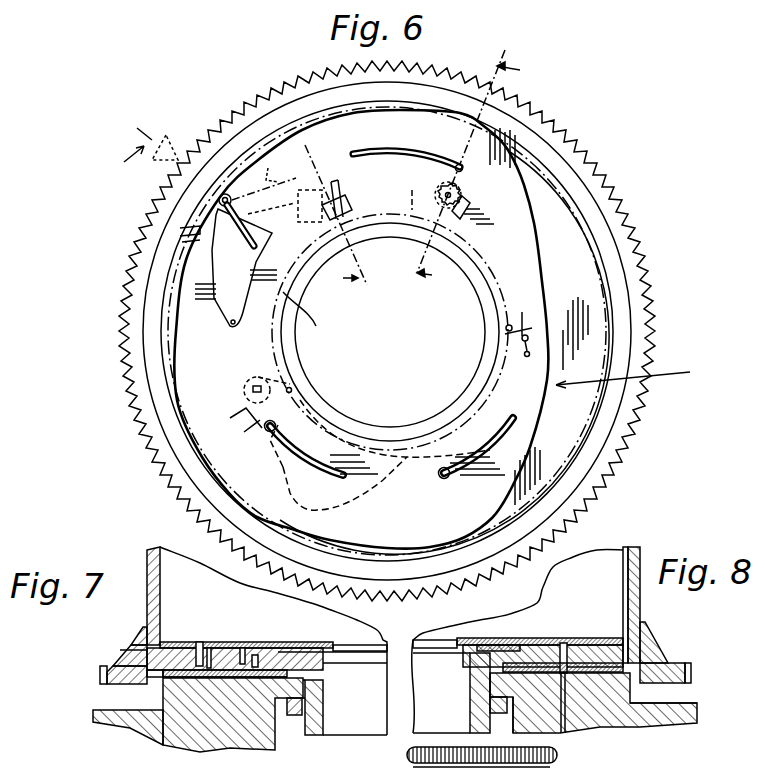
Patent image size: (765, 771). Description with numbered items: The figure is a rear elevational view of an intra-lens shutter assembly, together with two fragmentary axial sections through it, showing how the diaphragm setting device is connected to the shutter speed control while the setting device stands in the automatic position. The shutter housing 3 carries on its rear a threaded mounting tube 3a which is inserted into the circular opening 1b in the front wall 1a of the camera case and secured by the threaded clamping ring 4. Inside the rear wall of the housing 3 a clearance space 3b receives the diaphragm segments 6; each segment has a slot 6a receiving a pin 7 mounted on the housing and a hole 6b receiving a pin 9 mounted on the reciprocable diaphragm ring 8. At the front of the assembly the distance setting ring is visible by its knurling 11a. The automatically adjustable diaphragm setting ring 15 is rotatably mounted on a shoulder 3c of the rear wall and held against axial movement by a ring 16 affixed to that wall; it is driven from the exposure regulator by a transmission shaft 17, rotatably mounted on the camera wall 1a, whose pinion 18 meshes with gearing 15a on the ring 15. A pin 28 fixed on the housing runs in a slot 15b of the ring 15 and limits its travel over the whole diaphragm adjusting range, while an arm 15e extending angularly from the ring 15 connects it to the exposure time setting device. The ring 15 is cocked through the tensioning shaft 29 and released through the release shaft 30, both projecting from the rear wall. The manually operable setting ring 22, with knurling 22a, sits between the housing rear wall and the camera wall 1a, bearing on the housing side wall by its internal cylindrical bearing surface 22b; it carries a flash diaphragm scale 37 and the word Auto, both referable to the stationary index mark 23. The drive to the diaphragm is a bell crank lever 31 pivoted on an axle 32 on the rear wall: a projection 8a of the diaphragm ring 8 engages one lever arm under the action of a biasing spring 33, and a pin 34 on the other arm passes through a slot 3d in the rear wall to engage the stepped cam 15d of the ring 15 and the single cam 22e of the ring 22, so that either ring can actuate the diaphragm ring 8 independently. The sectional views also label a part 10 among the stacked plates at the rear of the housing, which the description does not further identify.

In FIG. 7, the front wall 1a is at (158, 722).
In FIG. 8, the front wall 1a is at (643, 712).
In FIG. 7, the circular opening 1b is at (323, 693).
In FIG. 8, the circular opening 1b is at (478, 693).
In FIG. 7, the shutter housing 3 is at (150, 552).
In FIG. 8, the shutter housing 3 is at (642, 603).
In FIG. 6, the mounting tube 3a is at (478, 373).
In FIG. 7, the mounting tube 3a is at (323, 712).
In FIG. 8, the mounting tube 3a is at (470, 708).
In FIG. 7, the clearance space 3b is at (277, 648).
In FIG. 8, the clearance space 3b is at (530, 645).
In FIG. 7, the shoulder 3c is at (325, 675).
In FIG. 8, the shoulder 3c is at (470, 668).
In FIG. 6, the slot 3d is at (160, 218).
In FIG. 7, the slot 3d is at (133, 646).
In FIG. 7, the clamping ring 4 is at (295, 716).
In FIG. 8, the clamping ring 4 is at (498, 716).
In FIG. 6, the diaphragm segments 6 is at (365, 490).
In FIG. 7, the diaphragm segments 6 is at (322, 645).
In FIG. 8, the diaphragm segments 6 is at (500, 646).
In FIG. 6, the slot 6a is at (252, 385).
In FIG. 6, the hole 6b is at (292, 388).
In FIG. 6, the pin 7 is at (239, 282).
In FIG. 6, the diaphragm ring 8 is at (409, 195).
In FIG. 7, the diaphragm ring 8 is at (298, 642).
In FIG. 8, the diaphragm ring 8 is at (492, 638).
In FIG. 6, the projection 8a is at (340, 182).
In FIG. 6, the pin 9 is at (292, 394).
In FIG. 7, the guide pin 10 is at (256, 648).
In FIG. 8, the guide pin 10 is at (563, 640).
In FIG. 8, the knurling 11a is at (560, 756).
In FIG. 6, the diaphragm setting ring 15 is at (182, 318).
In FIG. 7, the diaphragm setting ring 15 is at (208, 728).
In FIG. 8, the diaphragm setting ring 15 is at (608, 722).
In FIG. 6, the gearing 15a is at (420, 168).
In FIG. 6, the slot 15b is at (396, 146).
In FIG. 6, the cam 15d is at (190, 258).
In FIG. 8, the arm 15e is at (630, 548).
In FIG. 7, the ring 16 is at (248, 690).
In FIG. 8, the ring 16 is at (545, 722).
In FIG. 6, the transmission shaft 17 is at (452, 192).
In FIG. 8, the transmission shaft 17 is at (563, 730).
In FIG. 6, the pinion 18 is at (470, 202).
In FIG. 8, the pinion 18 is at (580, 645).
In FIG. 6, the manually operable setting ring 22 is at (625, 212).
In FIG. 7, the manually operable setting ring 22 is at (115, 666).
In FIG. 8, the manually operable setting ring 22 is at (686, 667).
In FIG. 6, the knurling 22a is at (651, 260).
In FIG. 7, the knurling 22a is at (100, 677).
In FIG. 8, the knurling 22a is at (691, 678).
In FIG. 7, the internal cylindrical bearing surface 22b is at (140, 632).
In FIG. 8, the internal cylindrical bearing surface 22b is at (665, 648).
In FIG. 6, the cam 22e is at (628, 376).
In FIG. 6, the index mark 23 is at (168, 135).
In FIG. 6, the pin 28 is at (460, 163).
In FIG. 6, the tensioning shaft 29 is at (262, 432).
In FIG. 6, the release shaft 30 is at (452, 478).
In FIG. 6, the bell crank lever 31 is at (290, 172).
In FIG. 7, the bell crank lever 31 is at (211, 648).
In FIG. 6, the axle 32 is at (325, 180).
In FIG. 7, the axle 32 is at (228, 645).
In FIG. 6, the biasing spring 33 is at (519, 327).
In FIG. 6, the pin 34 is at (224, 194).
In FIG. 7, the pin 34 is at (199, 642).
In FIG. 6, the diaphragm scale 37 is at (600, 438).